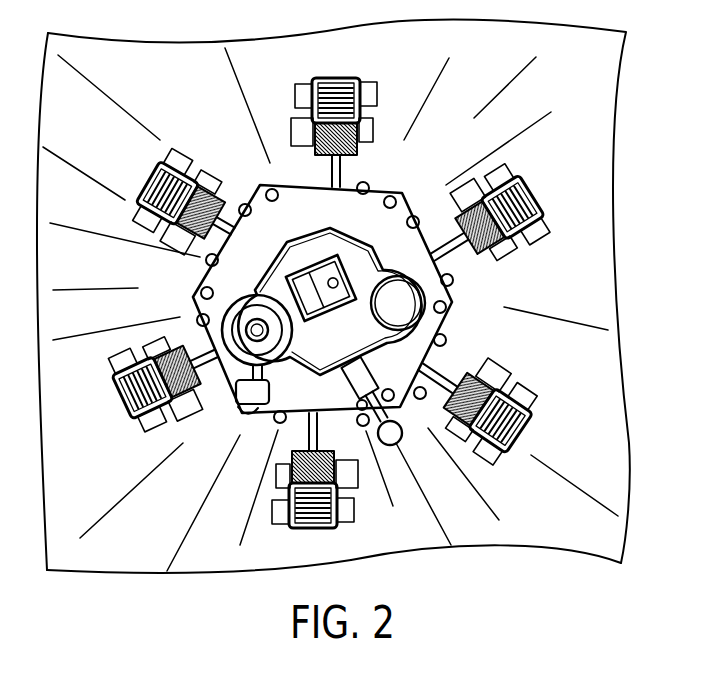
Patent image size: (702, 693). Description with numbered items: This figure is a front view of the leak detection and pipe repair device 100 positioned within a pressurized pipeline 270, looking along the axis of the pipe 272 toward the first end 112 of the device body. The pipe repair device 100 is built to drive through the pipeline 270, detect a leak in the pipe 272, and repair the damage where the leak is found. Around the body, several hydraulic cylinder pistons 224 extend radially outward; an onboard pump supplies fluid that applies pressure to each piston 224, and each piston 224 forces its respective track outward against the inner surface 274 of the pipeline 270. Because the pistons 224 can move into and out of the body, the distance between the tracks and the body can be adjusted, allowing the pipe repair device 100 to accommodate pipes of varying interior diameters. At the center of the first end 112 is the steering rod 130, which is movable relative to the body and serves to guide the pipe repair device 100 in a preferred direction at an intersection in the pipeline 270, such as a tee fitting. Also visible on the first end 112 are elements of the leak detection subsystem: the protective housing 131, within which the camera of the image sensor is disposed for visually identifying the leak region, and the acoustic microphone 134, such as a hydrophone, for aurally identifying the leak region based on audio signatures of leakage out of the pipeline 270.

The leak detection and pipe repair device 100 is at (244, 164).
The first end 112 is at (253, 278).
The steering rod 130 is at (257, 330).
The protective housing 131 is at (333, 275).
The acoustic microphone 134 is at (409, 303).
The piston 224 is at (280, 137).
The pipeline 270 is at (469, 525).
The pipe 272 is at (175, 523).
The inner surface 274 is at (574, 378).